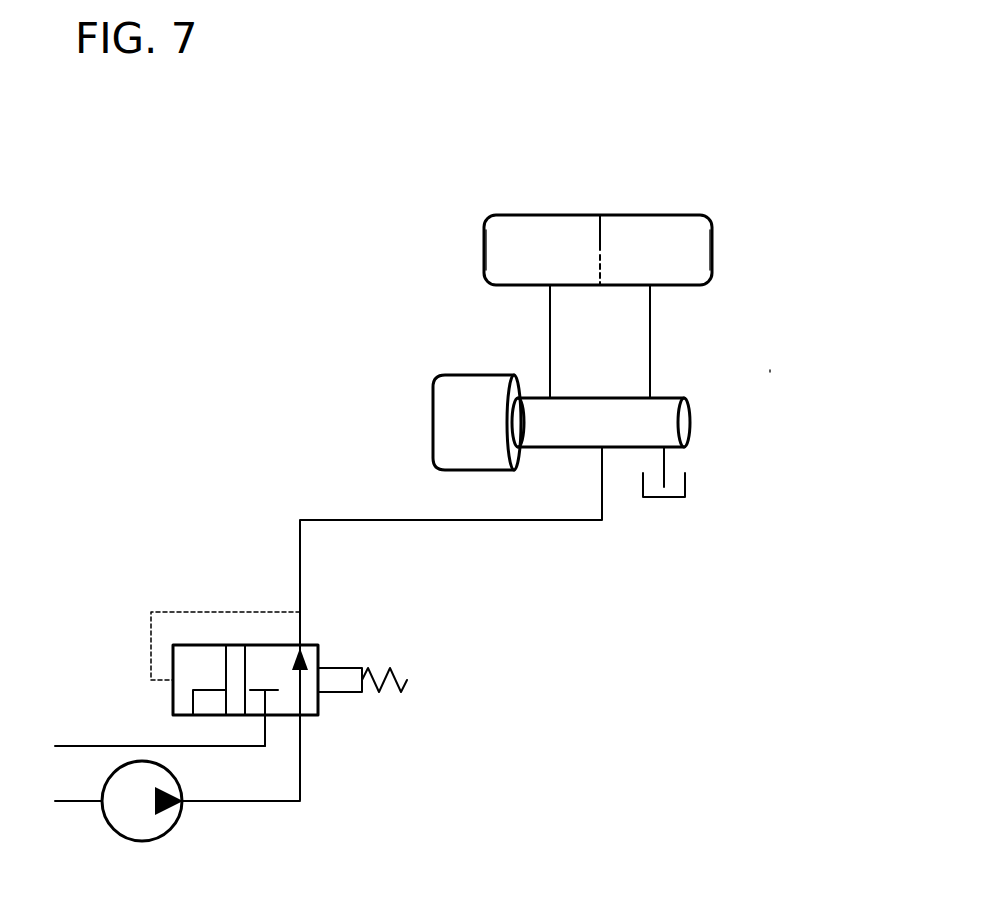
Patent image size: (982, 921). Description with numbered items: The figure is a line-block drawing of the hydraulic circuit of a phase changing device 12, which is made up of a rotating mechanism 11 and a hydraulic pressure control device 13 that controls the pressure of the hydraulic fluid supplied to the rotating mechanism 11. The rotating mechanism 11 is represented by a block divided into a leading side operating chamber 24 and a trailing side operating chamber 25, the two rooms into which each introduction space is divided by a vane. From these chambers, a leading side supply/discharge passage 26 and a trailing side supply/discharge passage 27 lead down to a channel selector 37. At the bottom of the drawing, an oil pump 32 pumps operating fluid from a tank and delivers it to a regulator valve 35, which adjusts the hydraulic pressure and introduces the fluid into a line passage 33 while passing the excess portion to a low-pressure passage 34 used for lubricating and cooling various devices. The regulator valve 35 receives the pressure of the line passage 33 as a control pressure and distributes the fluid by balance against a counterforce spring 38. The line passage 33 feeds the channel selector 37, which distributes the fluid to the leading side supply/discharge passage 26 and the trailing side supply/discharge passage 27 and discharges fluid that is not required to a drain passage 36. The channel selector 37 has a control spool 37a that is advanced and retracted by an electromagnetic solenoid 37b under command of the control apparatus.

The phase changing device 12 is at (893, 104).
The rotating mechanism 11 is at (708, 206).
The hydraulic pressure control device 13 is at (772, 362).
The leading side operating chamber 24 is at (712, 248).
The trailing side operating chamber 25 is at (484, 248).
The leading side supply/discharge passage 26 is at (652, 368).
The trailing side supply/discharge passage 27 is at (552, 368).
The channel selector 37 is at (704, 416).
The control spool 37a is at (565, 448).
The electromagnetic solenoid 37b is at (437, 440).
The drain passage 36 is at (680, 468).
The line passage 33 is at (447, 522).
The regulator valve 35 is at (322, 724).
The counterforce spring 38 is at (405, 683).
The low-pressure passage 34 is at (95, 742).
The oil pump 32 is at (180, 812).